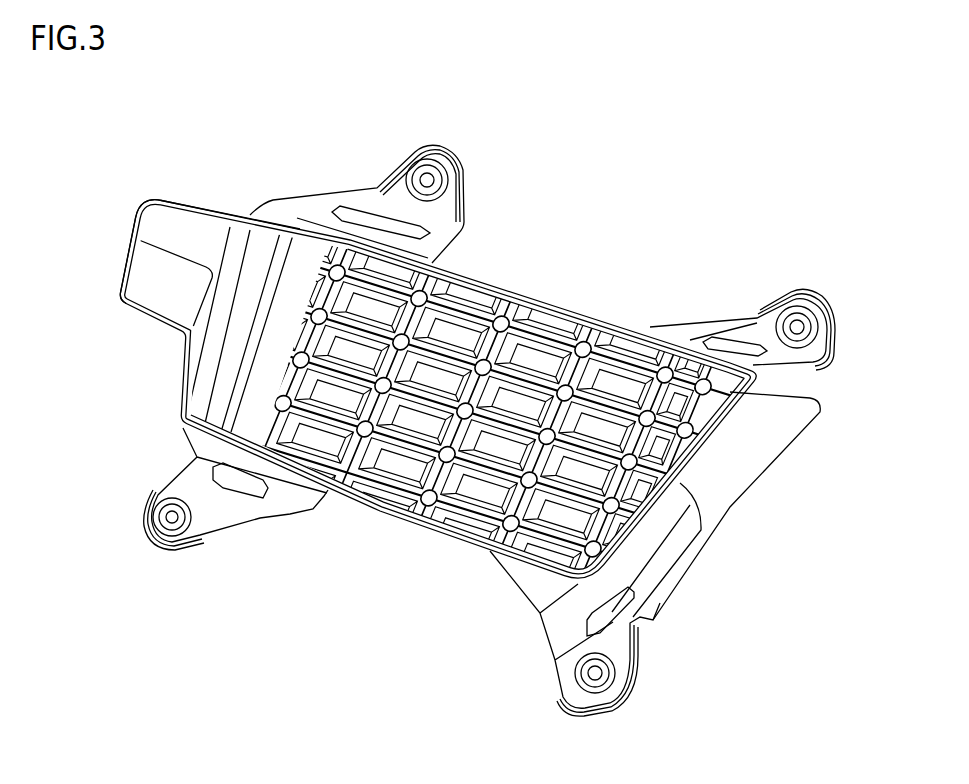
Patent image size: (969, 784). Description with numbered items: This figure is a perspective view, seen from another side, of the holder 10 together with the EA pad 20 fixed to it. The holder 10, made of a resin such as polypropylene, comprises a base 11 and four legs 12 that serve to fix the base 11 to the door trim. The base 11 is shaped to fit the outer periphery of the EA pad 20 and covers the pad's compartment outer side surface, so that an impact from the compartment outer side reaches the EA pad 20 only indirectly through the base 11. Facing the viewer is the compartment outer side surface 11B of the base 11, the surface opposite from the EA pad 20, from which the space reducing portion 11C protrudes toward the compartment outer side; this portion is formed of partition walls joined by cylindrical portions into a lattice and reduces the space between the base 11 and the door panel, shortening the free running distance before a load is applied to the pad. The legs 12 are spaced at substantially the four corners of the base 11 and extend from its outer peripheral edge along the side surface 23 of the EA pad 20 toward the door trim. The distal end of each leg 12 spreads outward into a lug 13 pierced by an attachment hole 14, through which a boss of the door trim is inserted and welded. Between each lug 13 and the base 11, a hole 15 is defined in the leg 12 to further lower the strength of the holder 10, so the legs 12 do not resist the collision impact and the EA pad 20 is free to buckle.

The holder 10 is at (477, 420).
The base 11 is at (500, 290).
The compartment outer side surface 11B is at (302, 292).
The space reducing portion 11C is at (441, 518).
The leg 12 is at (308, 197).
The lug 13 is at (434, 150).
The attachment hole 14 is at (428, 180).
The hole 15 is at (370, 221).
The EA pad 20 is at (716, 506).
The side surface 23 is at (758, 440).